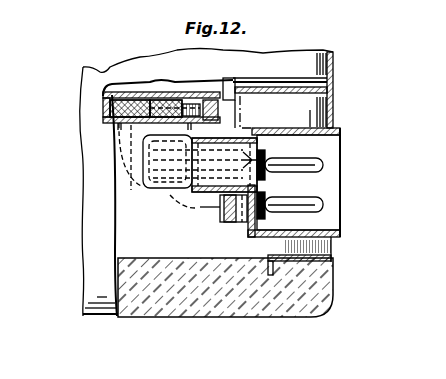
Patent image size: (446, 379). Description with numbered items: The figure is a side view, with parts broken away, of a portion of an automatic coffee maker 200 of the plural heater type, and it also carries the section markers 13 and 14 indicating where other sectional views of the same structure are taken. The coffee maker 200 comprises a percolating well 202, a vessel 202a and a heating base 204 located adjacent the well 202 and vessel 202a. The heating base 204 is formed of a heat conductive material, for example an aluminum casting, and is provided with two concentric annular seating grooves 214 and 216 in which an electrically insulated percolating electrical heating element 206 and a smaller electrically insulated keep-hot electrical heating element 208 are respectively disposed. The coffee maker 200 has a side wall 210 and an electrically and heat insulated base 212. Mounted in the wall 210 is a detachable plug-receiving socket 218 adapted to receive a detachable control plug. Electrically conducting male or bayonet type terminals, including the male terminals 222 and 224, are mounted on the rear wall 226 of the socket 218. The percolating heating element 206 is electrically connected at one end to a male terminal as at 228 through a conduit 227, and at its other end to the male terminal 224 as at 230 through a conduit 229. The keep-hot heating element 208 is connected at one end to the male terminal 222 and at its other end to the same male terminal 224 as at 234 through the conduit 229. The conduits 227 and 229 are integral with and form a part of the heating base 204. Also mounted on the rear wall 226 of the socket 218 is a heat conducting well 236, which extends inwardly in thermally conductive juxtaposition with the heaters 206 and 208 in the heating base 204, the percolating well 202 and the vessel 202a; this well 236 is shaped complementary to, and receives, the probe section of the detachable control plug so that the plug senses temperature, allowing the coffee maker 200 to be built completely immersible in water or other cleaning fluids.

The section line 13- 13 is at (107, 88).
The section line 14- 14 is at (320, 33).
The automatic coffee maker 200 is at (354, 100).
The percolating well 202 is at (186, 78).
The vessel 202a is at (296, 86).
The heating base 204 is at (228, 121).
The percolating electrical heating element 206 is at (160, 63).
The keep-hot electrical heating element 208 is at (113, 86).
The side wall 210 is at (108, 68).
The base 212 is at (206, 317).
The annular seating groove 214 is at (199, 98).
The annular seating groove 216 is at (120, 142).
The plug-receiving socket 218 is at (339, 234).
The male terminal 222 is at (323, 207).
The male terminal 224 is at (294, 160).
The rear wall 226 is at (272, 232).
The conduit 227 is at (233, 222).
The connection 228 is at (206, 209).
The conduit 229 is at (113, 171).
The connection 230 is at (167, 161).
The connection 234 is at (153, 186).
The heat conducting well 236 is at (160, 191).